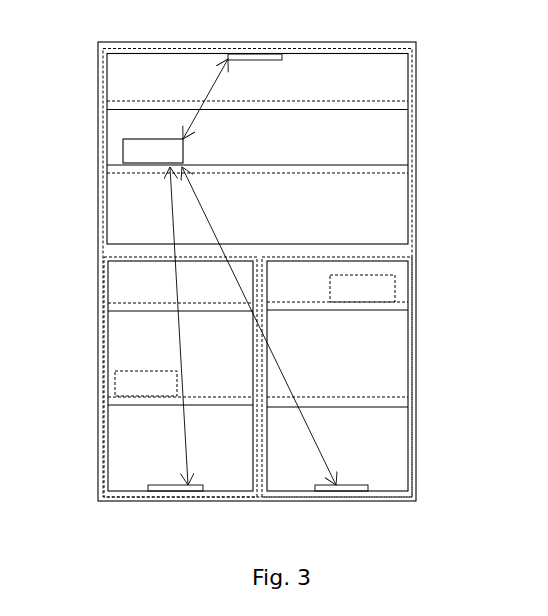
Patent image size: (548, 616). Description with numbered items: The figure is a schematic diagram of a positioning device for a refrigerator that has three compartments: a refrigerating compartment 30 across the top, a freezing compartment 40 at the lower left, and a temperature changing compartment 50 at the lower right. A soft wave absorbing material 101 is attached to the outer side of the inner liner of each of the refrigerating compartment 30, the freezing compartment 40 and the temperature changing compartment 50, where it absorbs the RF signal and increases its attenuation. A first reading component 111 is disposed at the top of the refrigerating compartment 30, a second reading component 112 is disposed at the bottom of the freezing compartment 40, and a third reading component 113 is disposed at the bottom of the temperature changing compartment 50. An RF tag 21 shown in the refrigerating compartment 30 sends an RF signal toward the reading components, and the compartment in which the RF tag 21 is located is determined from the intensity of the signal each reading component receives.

The wave absorbing material 101 is at (104, 283).
The refrigerating compartment 30 is at (388, 143).
The freezing compartment 40 is at (133, 438).
The temperature changing compartment 50 is at (378, 388).
The RF tag 21 is at (125, 142).
The first reading component 111 is at (258, 58).
The second reading component 112 is at (147, 490).
The third reading component 113 is at (360, 487).